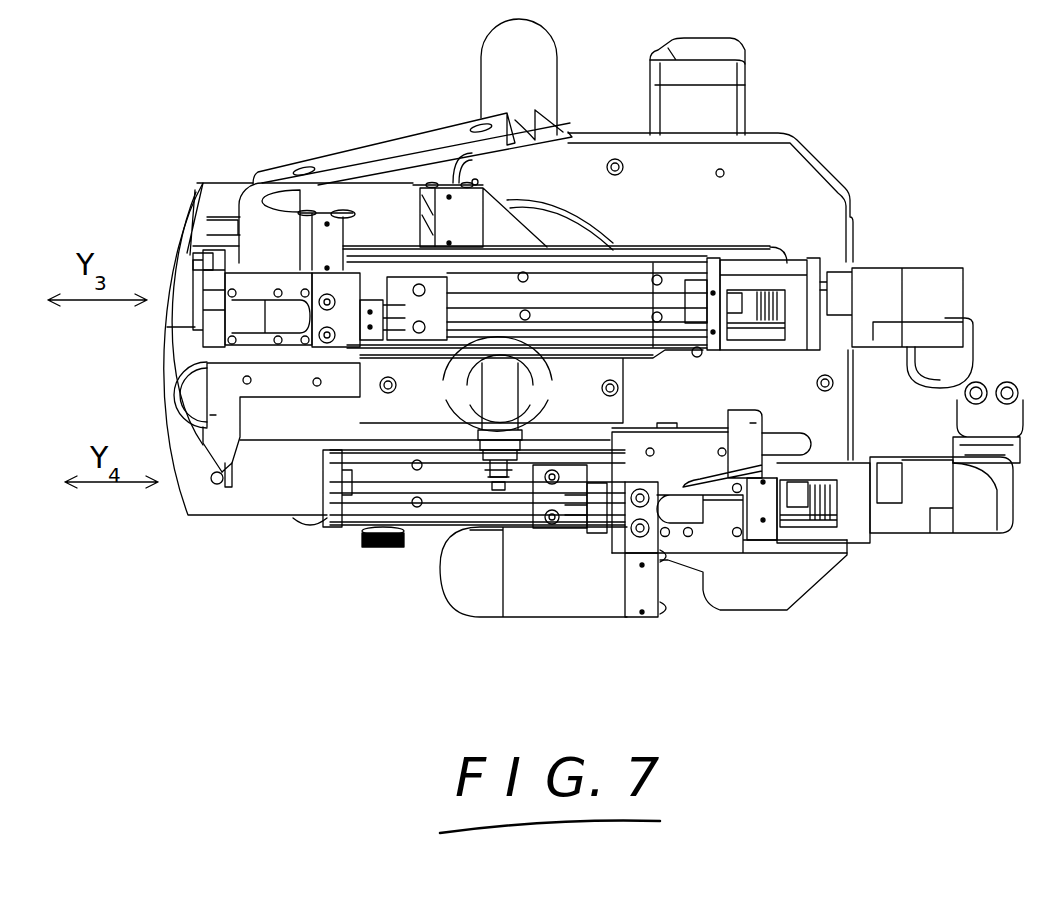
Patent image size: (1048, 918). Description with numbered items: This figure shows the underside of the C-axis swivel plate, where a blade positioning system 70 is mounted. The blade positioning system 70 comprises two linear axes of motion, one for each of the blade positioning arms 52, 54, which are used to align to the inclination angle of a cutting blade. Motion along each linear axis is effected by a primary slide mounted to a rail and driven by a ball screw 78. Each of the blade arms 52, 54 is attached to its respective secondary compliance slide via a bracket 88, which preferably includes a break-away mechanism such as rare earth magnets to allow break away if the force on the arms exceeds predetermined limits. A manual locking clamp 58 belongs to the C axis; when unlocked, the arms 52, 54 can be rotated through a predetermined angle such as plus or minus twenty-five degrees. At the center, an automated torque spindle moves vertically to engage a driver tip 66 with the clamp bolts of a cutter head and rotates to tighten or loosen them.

The blade positioning arm 52 is at (220, 448).
The blade positioning arm 54 is at (728, 474).
The manual locking clamp 58 is at (365, 543).
The driver tip 66 is at (460, 497).
The blade positioning system 70 is at (255, 538).
The ball screw 78 is at (632, 300).
The bracket 88 is at (220, 388).